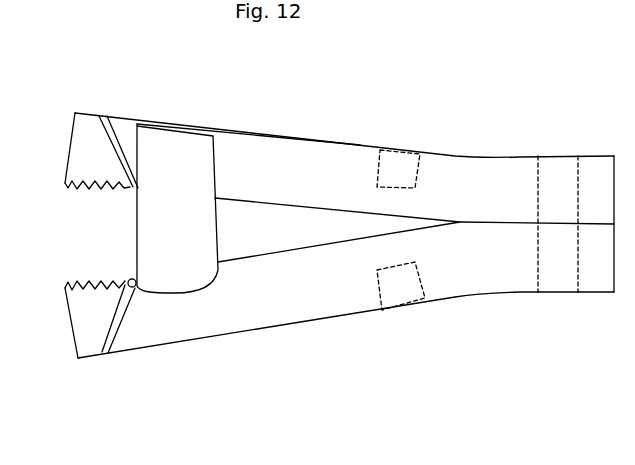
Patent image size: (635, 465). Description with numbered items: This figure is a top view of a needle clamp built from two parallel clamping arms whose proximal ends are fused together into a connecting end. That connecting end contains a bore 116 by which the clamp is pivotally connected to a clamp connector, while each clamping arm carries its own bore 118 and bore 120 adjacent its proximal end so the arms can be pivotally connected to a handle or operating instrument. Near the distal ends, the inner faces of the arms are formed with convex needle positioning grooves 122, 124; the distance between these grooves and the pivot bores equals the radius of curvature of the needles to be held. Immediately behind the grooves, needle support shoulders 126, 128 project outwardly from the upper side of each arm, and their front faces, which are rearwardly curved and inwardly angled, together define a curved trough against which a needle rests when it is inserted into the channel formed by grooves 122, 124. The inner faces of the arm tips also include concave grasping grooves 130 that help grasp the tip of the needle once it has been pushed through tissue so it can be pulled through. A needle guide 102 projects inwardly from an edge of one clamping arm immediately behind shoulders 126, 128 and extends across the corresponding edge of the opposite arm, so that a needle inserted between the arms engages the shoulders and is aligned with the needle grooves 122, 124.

The needle guide 102 is at (195, 143).
The bore 116 is at (563, 180).
The bore 118 is at (398, 160).
The bore 120 is at (406, 290).
The convex needle positioning groove 122 is at (123, 189).
The convex needle positioning groove 124 is at (128, 280).
The needle support shoulder 126 is at (111, 125).
The needle support shoulder 128 is at (115, 327).
The concave grasping groove 130 is at (72, 160).